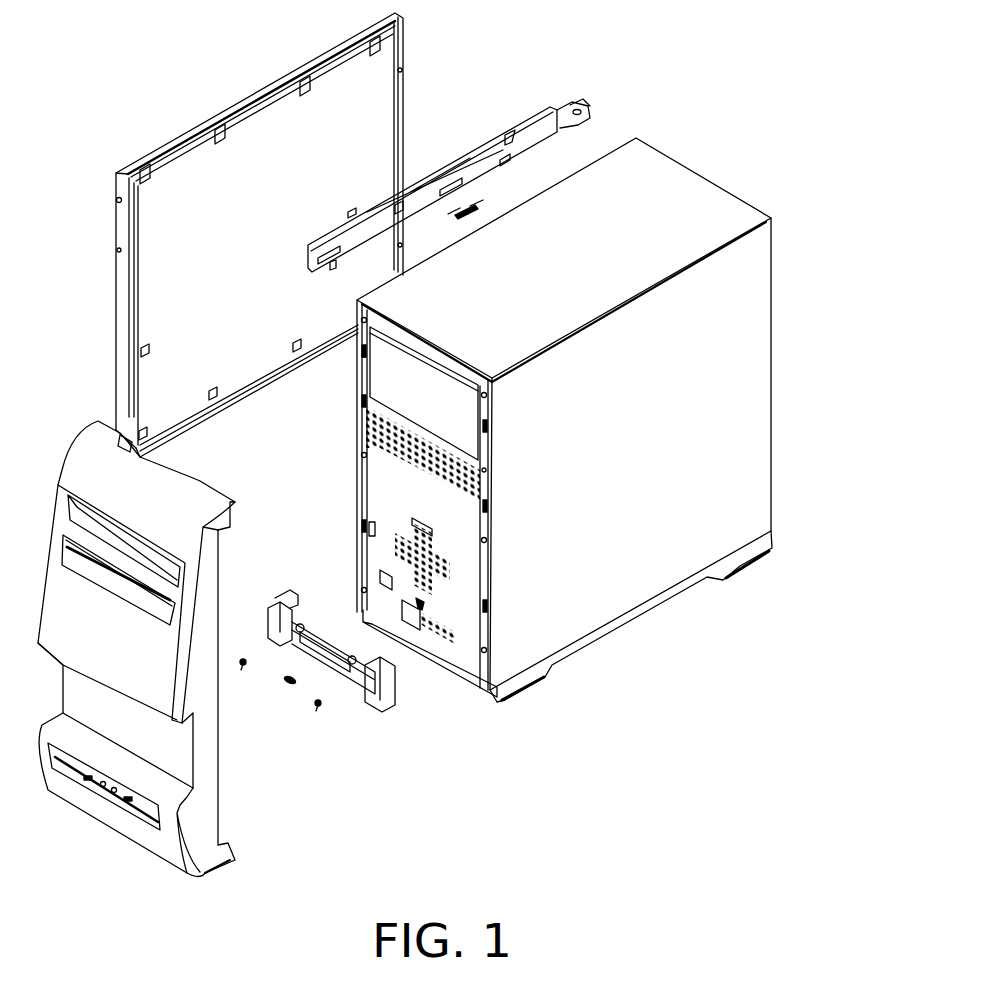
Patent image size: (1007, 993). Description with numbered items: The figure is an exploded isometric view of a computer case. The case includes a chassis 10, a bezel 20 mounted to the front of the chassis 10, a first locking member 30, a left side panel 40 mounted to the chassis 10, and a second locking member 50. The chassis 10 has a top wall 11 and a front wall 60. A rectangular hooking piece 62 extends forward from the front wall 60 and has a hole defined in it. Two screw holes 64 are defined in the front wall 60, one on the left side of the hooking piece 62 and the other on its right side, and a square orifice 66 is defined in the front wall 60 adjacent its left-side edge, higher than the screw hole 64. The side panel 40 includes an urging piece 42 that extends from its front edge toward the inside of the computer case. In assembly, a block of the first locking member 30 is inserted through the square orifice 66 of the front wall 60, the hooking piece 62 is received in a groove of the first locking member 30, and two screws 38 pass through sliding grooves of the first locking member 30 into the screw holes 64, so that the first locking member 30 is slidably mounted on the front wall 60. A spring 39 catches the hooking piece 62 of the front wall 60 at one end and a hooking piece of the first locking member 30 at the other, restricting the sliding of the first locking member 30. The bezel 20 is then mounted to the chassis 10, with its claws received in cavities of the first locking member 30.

The chassis 10 is at (573, 426).
The top wall 11 is at (675, 190).
The bezel 20 is at (143, 880).
The first locking member 30 is at (390, 713).
The screws 38 is at (242, 668).
The spring 39 is at (286, 684).
The side panel 40 is at (228, 95).
The urging piece 42 is at (128, 440).
The second locking member 50 is at (550, 95).
The front wall 60 is at (467, 557).
The hooking piece 62 is at (419, 605).
The screw holes 64 is at (386, 582).
The square orifice 66 is at (372, 528).